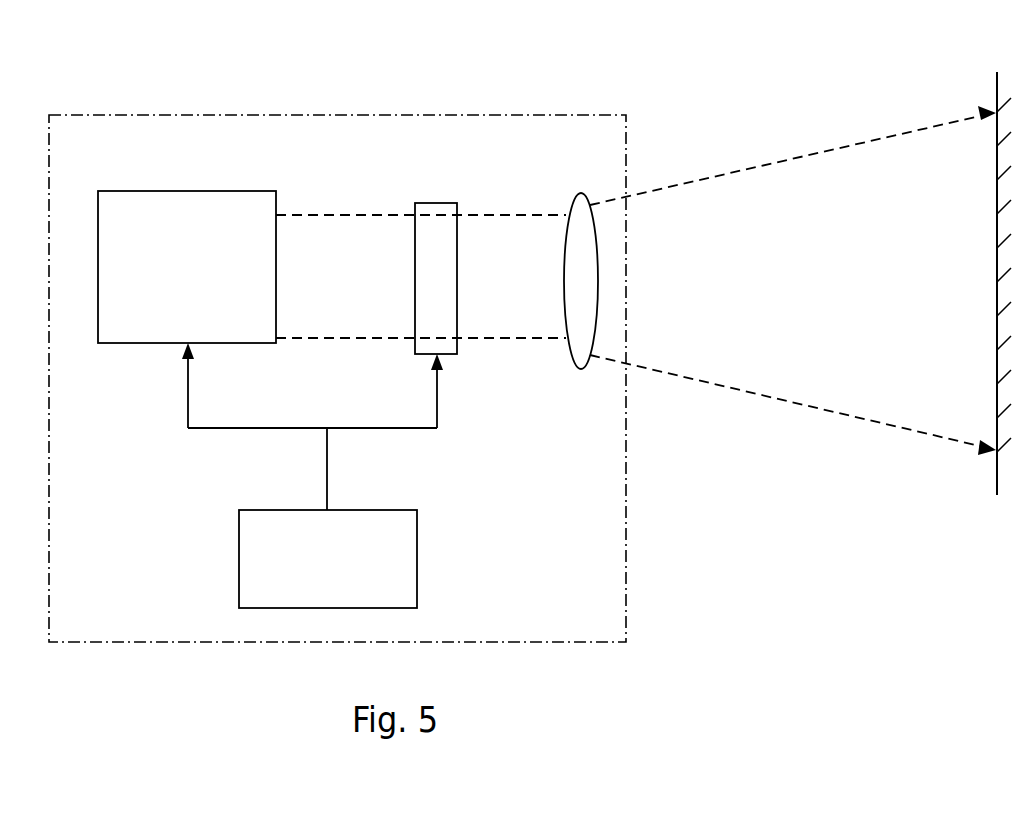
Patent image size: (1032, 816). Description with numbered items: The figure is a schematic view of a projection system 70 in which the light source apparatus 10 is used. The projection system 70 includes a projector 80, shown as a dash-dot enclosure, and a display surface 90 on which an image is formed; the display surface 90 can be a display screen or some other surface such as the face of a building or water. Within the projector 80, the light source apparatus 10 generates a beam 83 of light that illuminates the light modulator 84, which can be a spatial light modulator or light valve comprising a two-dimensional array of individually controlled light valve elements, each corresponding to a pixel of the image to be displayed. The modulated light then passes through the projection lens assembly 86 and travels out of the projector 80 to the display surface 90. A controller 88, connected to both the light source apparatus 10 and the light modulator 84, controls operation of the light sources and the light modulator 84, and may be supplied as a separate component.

The light source apparatus 10 is at (188, 200).
The projection system 70 is at (690, 60).
The projector 80 is at (87, 114).
The beam 83 is at (340, 262).
The light modulator 84 is at (437, 204).
The projection lens assembly 86 is at (582, 200).
The controller 88 is at (238, 558).
The display surface 90 is at (995, 97).